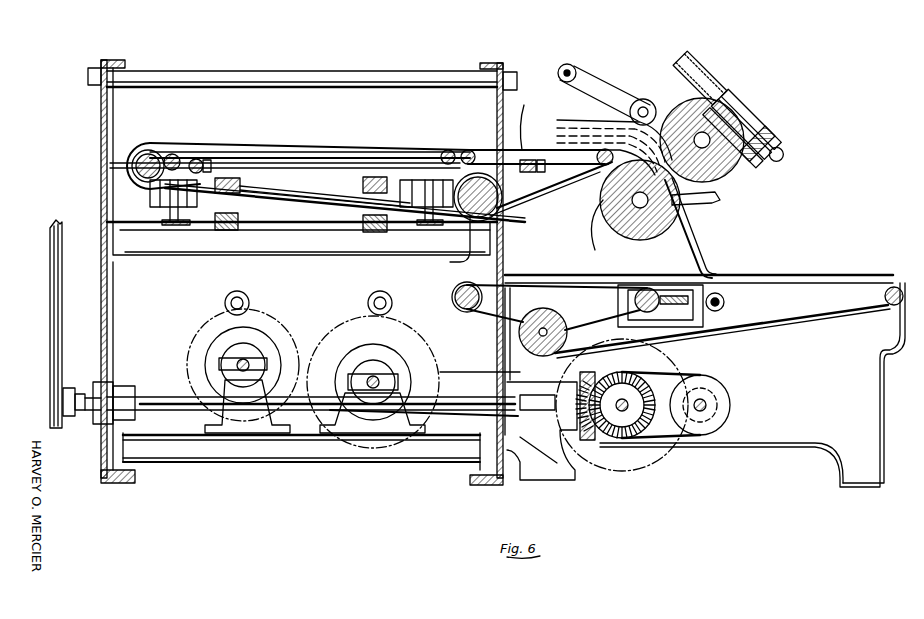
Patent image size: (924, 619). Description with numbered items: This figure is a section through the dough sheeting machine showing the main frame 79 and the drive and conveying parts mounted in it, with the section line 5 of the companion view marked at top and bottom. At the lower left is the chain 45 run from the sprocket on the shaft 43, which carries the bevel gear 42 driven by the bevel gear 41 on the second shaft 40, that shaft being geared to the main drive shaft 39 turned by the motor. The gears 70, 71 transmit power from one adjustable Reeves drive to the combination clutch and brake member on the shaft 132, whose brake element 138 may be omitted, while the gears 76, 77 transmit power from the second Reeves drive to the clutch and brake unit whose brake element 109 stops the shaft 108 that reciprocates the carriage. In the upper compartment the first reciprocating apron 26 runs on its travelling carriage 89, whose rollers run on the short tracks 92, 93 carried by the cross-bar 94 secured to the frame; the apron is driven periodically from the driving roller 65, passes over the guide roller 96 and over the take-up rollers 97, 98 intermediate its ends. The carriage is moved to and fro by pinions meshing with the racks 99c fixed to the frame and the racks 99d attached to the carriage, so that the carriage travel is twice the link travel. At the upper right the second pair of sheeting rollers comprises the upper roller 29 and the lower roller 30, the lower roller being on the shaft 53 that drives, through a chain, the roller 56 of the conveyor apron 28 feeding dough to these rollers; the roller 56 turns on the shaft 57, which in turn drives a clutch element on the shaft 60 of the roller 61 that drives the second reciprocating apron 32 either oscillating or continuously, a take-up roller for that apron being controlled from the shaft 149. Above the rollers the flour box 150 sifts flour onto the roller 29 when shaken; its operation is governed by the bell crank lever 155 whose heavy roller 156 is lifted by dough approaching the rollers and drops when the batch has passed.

The section line 5— 5 is at (355, 20).
The first reciprocating apron 26 is at (335, 160).
The conveyor apron 28 is at (522, 125).
The upper roller 29 is at (725, 152).
The lower roller 30 is at (648, 250).
The second reciprocating apron 32 is at (828, 283).
The main drive shaft 39 is at (705, 405).
The second shaft 40 is at (618, 430).
The bevel gear 41 is at (640, 445).
The bevel gear 42 is at (603, 445).
The shaft 43 is at (162, 403).
The chain 45 is at (52, 330).
The shaft 53 is at (630, 222).
The roller 56 is at (512, 230).
The shaft 57 is at (535, 195).
The shaft 60 is at (518, 334).
The roller 61 is at (560, 330).
The driving roller 65 is at (136, 160).
The gear 70 is at (368, 292).
The gear 71 is at (405, 325).
The gear 76 is at (247, 295).
The gear 77 is at (268, 320).
The main frame 79 is at (101, 332).
The travelling carriage 89 is at (282, 168).
The short track 92 is at (176, 228).
The short track 93 is at (432, 230).
The cross-bar 94 is at (152, 247).
The guide roller 96 is at (450, 150).
The take-up roller 97 is at (200, 160).
The take-up roller 98 is at (190, 150).
The rack 99c is at (363, 222).
The rack 99d is at (363, 186).
The shaft 108 is at (240, 362).
The brake element 109 is at (286, 338).
The shaft 132 is at (397, 364).
The brake element 138 is at (378, 380).
The shaft 149 is at (724, 302).
The flour box 150 is at (715, 70).
The bell crank lever 155 is at (635, 80).
The roller 156 is at (662, 86).